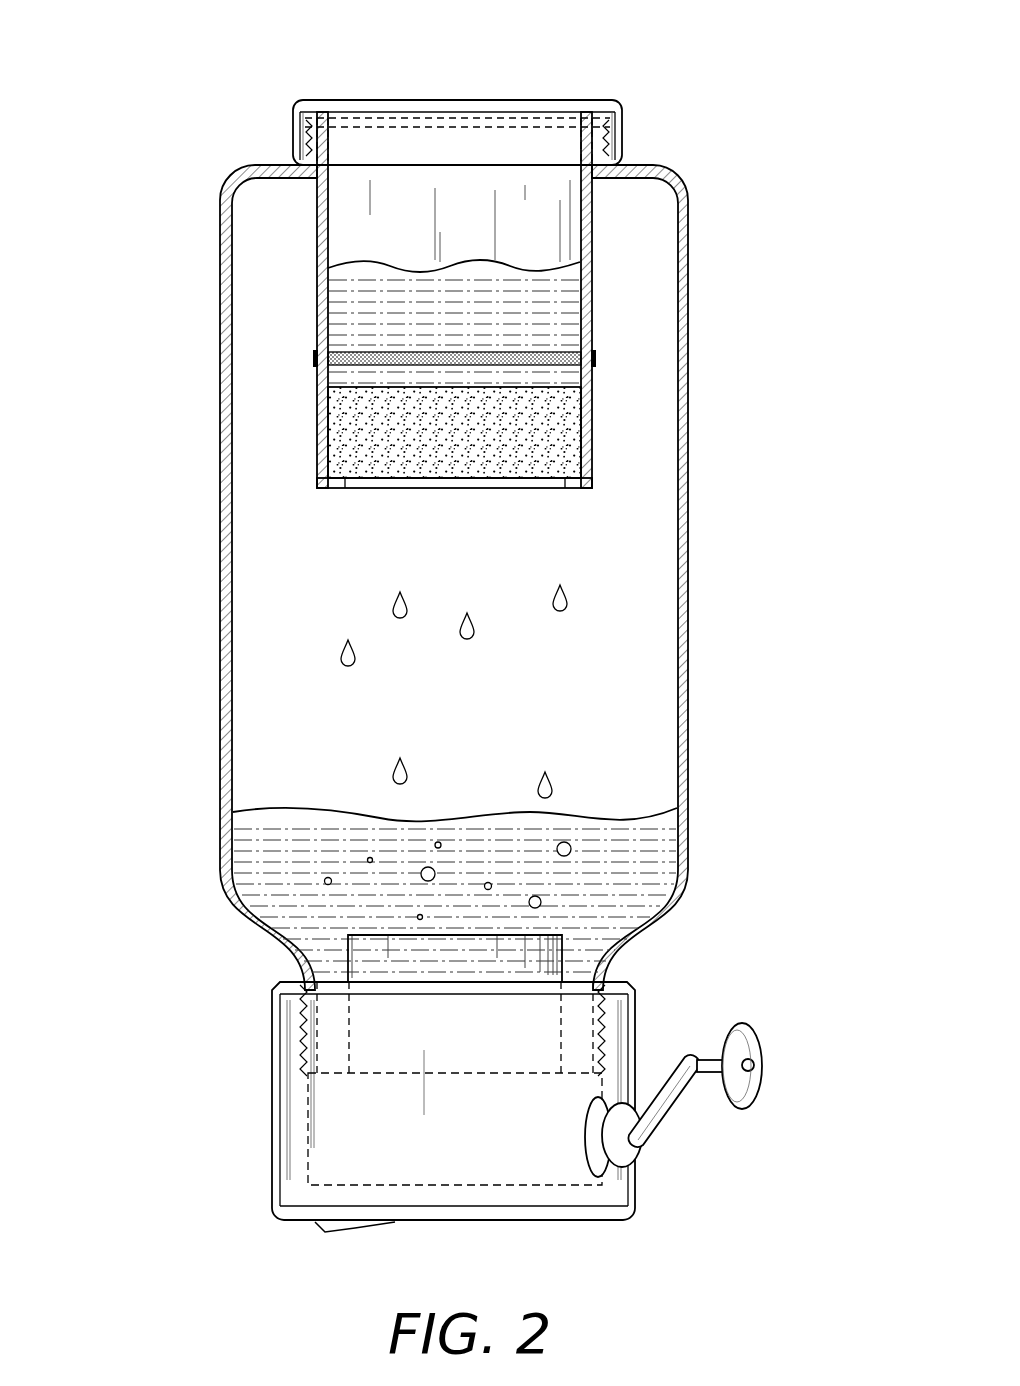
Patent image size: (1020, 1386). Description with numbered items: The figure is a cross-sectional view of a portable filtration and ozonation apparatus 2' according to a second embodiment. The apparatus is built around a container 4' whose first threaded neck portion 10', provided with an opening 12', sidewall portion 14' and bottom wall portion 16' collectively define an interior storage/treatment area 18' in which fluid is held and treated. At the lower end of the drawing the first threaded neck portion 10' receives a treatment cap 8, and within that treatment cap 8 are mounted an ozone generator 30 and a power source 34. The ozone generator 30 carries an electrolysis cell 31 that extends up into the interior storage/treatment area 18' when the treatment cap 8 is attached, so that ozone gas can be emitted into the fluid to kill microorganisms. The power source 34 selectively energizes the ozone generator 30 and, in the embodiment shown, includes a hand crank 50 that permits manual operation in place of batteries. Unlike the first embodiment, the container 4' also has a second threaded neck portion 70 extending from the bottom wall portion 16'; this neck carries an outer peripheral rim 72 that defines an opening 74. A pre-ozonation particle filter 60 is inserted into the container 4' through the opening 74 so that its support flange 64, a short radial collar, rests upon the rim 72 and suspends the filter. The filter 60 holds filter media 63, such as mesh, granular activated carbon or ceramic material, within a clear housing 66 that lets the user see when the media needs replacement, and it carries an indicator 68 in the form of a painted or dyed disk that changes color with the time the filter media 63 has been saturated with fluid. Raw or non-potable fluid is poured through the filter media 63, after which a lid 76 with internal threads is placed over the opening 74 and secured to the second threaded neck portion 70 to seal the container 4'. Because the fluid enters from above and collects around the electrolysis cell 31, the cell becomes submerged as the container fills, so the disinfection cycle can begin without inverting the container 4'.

The ozonation apparatus 2' is at (479, 654).
The container 4' is at (415, 607).
The treatment cap 8 is at (641, 1218).
The first threaded neck portion 10' is at (405, 1095).
The opening 12' is at (341, 1188).
The sidewall portion 14' is at (396, 868).
The bottom wall portion 16' is at (467, 538).
The interior storage/treatment area 18' is at (454, 691).
The ozone generator 30 is at (356, 1047).
The electrolysis cell 31 is at (413, 966).
The power source 34 is at (478, 1157).
The hand crank 50 is at (746, 1088).
The pre-ozonation particle filter 60 is at (595, 420).
The filter media 63 is at (346, 460).
The support flange 64 is at (312, 125).
The clear housing 66 is at (317, 420).
The indicator 68 is at (316, 360).
The second threaded neck portion 70 is at (305, 133).
The peripheral rim 72 is at (533, 140).
The opening 74 is at (372, 148).
The lid 76 is at (475, 100).